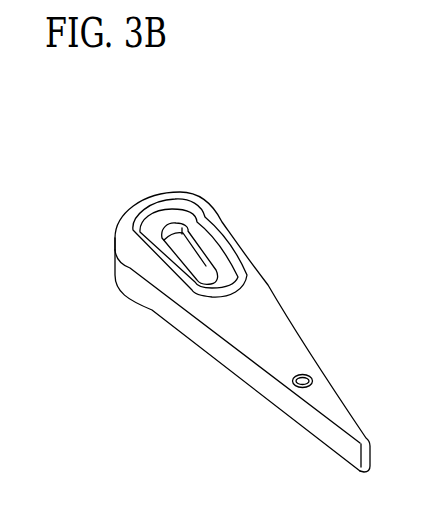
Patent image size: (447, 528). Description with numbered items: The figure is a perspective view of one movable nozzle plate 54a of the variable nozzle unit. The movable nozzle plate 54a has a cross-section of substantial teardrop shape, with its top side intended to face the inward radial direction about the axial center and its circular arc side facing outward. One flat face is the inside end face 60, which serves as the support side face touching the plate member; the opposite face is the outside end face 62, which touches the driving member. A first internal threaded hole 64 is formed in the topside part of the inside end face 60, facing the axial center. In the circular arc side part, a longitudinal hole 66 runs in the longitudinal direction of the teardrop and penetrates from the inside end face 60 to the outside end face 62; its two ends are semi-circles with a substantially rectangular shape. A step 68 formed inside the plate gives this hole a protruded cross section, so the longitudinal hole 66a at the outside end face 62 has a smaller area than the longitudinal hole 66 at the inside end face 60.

The movable nozzle plate 54a is at (207, 295).
The inside end face 60 is at (263, 308).
The outside end face 62 is at (242, 387).
The first internal threaded hole 64 is at (312, 375).
The longitudinal hole 66 is at (182, 219).
The longitudinal hole of the outside end face 66a is at (163, 239).
The step 68 is at (200, 253).